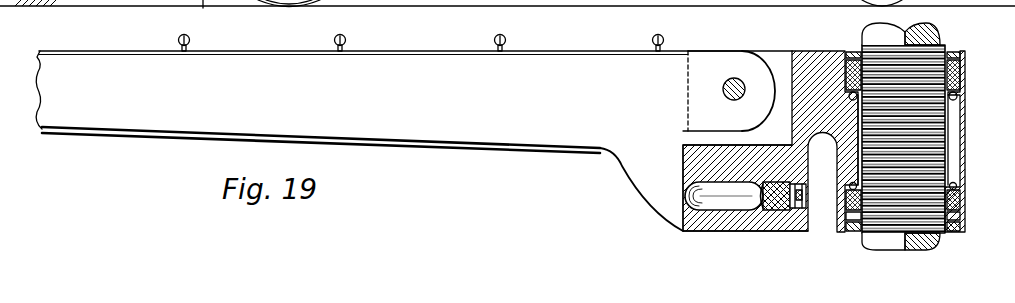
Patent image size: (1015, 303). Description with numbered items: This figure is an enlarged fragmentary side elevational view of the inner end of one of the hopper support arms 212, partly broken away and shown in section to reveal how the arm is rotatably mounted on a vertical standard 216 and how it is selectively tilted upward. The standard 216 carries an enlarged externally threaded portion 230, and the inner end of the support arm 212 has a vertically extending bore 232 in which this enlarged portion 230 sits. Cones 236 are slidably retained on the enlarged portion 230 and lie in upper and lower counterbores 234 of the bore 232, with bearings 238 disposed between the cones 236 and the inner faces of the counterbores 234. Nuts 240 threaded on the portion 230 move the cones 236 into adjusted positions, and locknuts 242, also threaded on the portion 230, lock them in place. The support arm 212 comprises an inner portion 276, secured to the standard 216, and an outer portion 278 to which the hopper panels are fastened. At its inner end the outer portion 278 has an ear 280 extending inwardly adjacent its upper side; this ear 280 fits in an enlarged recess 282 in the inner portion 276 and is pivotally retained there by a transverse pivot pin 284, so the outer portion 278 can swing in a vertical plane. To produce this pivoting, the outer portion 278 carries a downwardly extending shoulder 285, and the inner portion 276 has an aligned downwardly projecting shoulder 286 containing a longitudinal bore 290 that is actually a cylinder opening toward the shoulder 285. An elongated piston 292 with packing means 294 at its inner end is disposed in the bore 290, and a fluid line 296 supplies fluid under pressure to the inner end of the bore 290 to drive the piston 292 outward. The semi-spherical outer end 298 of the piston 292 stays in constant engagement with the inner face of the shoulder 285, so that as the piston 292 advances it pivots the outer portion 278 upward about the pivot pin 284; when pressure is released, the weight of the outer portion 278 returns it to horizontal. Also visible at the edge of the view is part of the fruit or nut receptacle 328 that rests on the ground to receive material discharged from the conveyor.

The support arm 212 is at (493, 152).
The vertical standard 216 is at (864, 45).
The externally threaded portion 230 is at (966, 150).
The bore 232 is at (965, 137).
The counterbore 234 is at (960, 219).
The cone 236 is at (961, 77).
The bearing 238 is at (963, 95).
The nut 240 is at (965, 207).
The locknut 242 is at (950, 55).
The inner portion 276 is at (803, 54).
The outer portion 278 is at (558, 63).
The ear 280 is at (698, 58).
The recess 282 is at (757, 50).
The pivot pin 284 is at (726, 96).
The shoulder 285 is at (638, 180).
The shoulder 286 is at (705, 225).
The bore 290 is at (736, 186).
The piston 292 is at (763, 186).
The packing means 294 is at (790, 212).
The fluid line 296 is at (780, 241).
The semi-spherical outer end 298 is at (685, 188).
The receptacle 328 is at (61, 0).